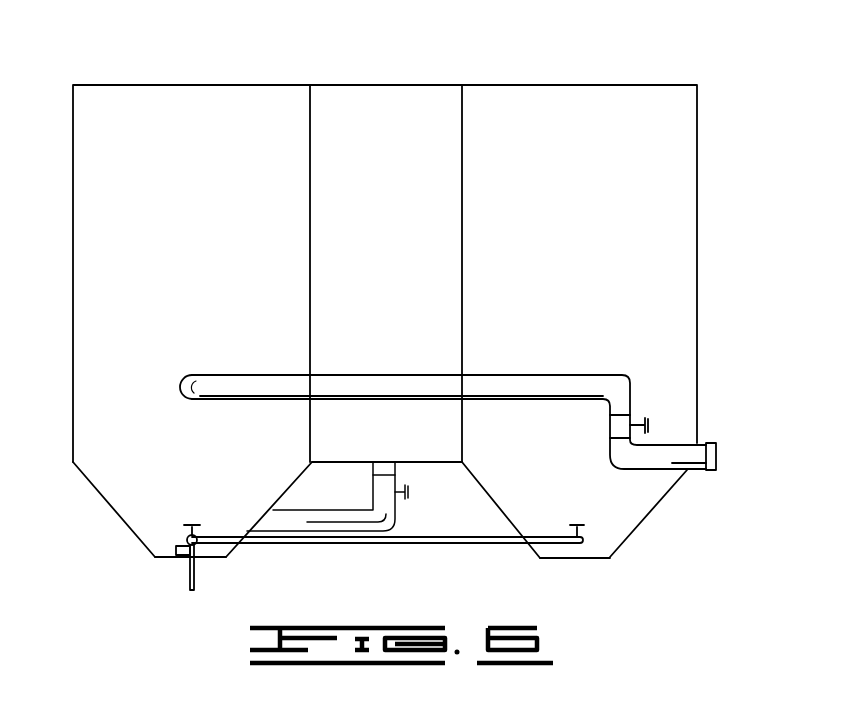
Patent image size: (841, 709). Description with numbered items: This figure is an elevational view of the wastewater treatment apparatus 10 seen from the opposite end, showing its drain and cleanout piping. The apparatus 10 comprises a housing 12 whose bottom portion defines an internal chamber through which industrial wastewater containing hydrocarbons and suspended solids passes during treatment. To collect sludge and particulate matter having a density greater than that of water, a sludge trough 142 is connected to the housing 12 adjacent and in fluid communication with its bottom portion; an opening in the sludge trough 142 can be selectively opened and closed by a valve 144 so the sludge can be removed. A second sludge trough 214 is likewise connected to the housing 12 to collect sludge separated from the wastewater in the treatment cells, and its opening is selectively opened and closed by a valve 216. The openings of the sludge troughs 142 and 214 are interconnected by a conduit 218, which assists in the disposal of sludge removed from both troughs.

The wastewater treatment apparatus 10 is at (420, 305).
The housing 12 is at (700, 112).
The sludge trough 142 is at (647, 502).
The valve 144 is at (628, 530).
The sludge trough 214 is at (122, 505).
The valve 216 is at (188, 526).
The conduit 218 is at (445, 540).